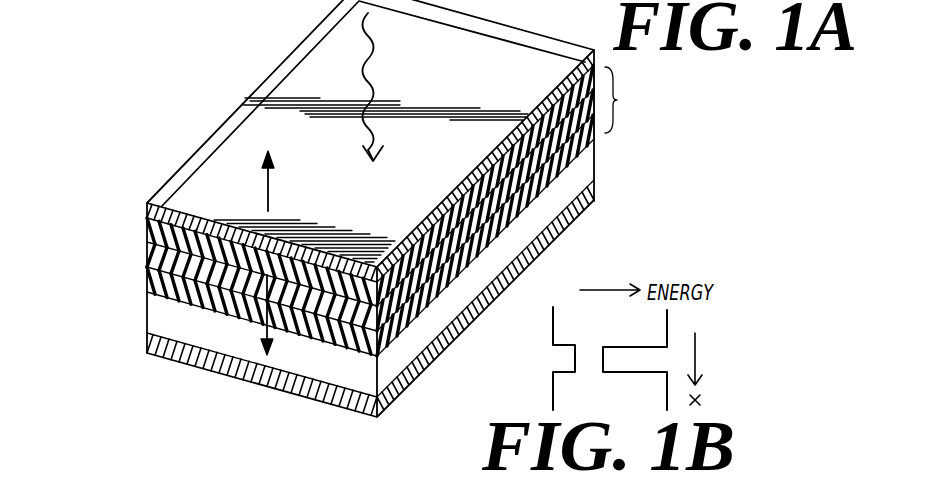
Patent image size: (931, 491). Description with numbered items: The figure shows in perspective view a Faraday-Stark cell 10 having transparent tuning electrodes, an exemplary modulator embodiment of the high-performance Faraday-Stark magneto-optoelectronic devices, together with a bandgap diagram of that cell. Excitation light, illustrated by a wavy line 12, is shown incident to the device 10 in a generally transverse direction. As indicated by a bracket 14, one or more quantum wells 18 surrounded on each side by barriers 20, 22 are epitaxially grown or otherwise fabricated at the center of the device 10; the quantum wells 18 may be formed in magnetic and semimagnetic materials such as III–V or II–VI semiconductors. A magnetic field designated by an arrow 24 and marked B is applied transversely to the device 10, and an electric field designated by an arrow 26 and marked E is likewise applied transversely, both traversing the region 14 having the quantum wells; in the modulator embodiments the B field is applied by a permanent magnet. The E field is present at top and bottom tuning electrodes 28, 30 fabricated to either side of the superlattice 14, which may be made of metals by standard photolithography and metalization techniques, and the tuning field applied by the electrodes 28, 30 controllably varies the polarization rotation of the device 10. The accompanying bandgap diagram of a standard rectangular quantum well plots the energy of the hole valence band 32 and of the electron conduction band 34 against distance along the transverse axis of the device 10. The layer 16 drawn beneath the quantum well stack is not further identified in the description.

In FIG. 1A, the Faraday-Stark cell 10 is at (132, 321).
In FIG. 1A, the excitation light 12 is at (378, 60).
In FIG. 1A, the bracket 14 is at (617, 102).
In FIG. 1A, the substrate 16 is at (520, 230).
In FIG. 1A, the quantum wells 18 is at (537, 158).
In FIG. 1A, the barrier 20 is at (540, 129).
In FIG. 1A, the barrier 22 is at (543, 187).
In FIG. 1A, the arrow 24 is at (265, 184).
In FIG. 1A, the arrow 26 is at (263, 334).
In FIG. 1A, the top tuning electrode 28 is at (147, 205).
In FIG. 1A, the bottom tuning electrode 30 is at (172, 357).
In FIG. 1B, the hole valence band 32 is at (553, 321).
In FIG. 1B, the electron conduction band 34 is at (668, 323).